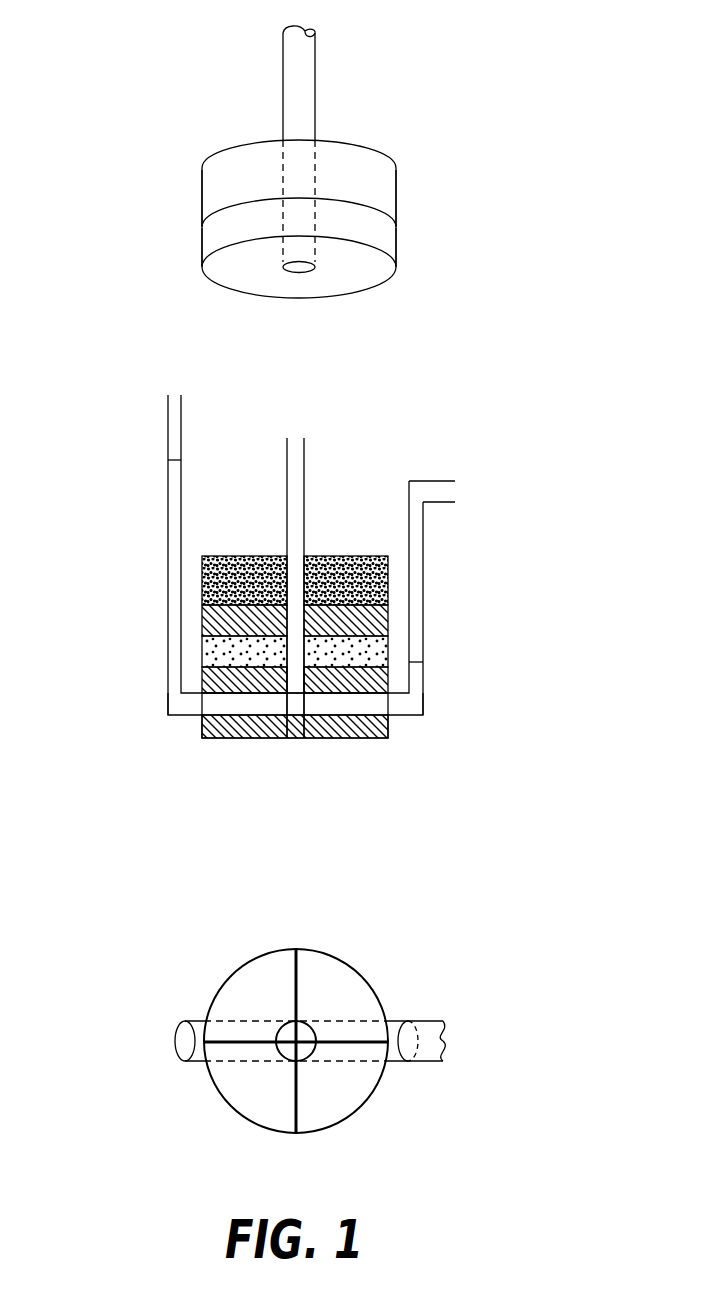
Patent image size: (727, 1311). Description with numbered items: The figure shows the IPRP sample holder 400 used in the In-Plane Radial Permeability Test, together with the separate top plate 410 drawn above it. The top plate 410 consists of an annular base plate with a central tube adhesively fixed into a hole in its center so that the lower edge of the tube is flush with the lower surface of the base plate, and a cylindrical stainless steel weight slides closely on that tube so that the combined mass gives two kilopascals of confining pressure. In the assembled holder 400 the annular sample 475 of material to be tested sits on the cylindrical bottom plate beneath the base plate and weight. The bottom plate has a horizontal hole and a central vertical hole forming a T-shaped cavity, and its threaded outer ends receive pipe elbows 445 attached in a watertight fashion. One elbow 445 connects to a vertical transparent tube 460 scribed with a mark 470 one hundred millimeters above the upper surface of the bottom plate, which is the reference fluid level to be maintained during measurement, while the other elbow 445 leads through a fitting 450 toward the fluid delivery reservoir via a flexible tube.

The IPRP sample holder 400 is at (130, 406).
The top plate 410 is at (196, 64).
The pipe elbows 445 is at (168, 688).
The outlet 450 is at (423, 548).
The vertical transparent tube 460 is at (168, 548).
The mark 470 is at (168, 460).
The annular sample 475 is at (388, 650).